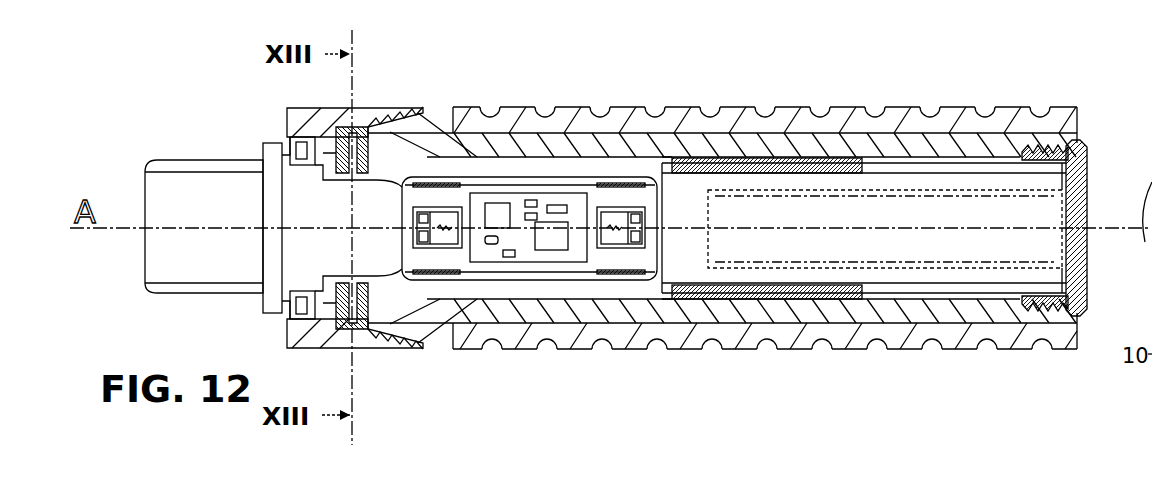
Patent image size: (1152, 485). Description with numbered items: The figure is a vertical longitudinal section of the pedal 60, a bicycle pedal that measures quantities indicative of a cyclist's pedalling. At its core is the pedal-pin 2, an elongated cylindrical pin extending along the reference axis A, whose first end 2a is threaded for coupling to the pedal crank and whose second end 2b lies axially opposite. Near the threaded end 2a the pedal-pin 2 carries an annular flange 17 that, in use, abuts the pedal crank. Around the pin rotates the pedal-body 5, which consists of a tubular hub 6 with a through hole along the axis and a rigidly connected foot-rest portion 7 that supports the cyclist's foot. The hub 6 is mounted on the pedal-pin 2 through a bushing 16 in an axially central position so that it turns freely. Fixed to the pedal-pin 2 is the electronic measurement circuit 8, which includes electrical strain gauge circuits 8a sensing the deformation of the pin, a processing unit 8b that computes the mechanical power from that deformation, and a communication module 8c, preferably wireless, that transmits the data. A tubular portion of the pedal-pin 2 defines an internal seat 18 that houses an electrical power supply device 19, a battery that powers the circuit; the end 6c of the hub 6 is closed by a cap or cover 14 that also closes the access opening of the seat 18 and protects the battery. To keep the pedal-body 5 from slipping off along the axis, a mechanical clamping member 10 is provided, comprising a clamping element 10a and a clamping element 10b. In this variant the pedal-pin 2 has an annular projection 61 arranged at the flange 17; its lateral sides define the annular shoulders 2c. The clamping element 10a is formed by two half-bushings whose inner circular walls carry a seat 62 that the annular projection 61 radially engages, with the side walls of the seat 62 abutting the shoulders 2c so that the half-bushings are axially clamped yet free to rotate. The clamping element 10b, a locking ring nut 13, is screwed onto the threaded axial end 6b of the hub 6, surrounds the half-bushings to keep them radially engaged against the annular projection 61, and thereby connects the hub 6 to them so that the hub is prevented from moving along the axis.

The pedal-pin 2 is at (692, 243).
The first end 2a is at (192, 158).
The second end 2b is at (1064, 172).
The annular shoulder 2c is at (338, 153).
The pedal-body 5 is at (1079, 104).
The hub 6 is at (826, 140).
The axial end of the hub 6b is at (423, 117).
The end of the hub 6c is at (1079, 134).
The foot-rest portion 7 is at (930, 107).
The electronic measurement circuit 8 is at (495, 176).
The electrical strain gauge circuit 8a is at (443, 249).
The processing unit 8b is at (500, 234).
The communication module 8c is at (558, 258).
The mechanical clamping member 10 is at (364, 352).
The clamping element 10a is at (333, 318).
The clamping element 10b is at (406, 111).
The locking ring nut 13 is at (285, 340).
The cap or cover 14 is at (1087, 295).
The bushing 16 is at (747, 163).
The flange 17 is at (263, 304).
The seat 18 is at (905, 252).
The electrical power supply device 19 is at (821, 332).
The pedal 60 is at (118, 312).
The annular projection 61 is at (372, 160).
The seat 62 is at (360, 303).